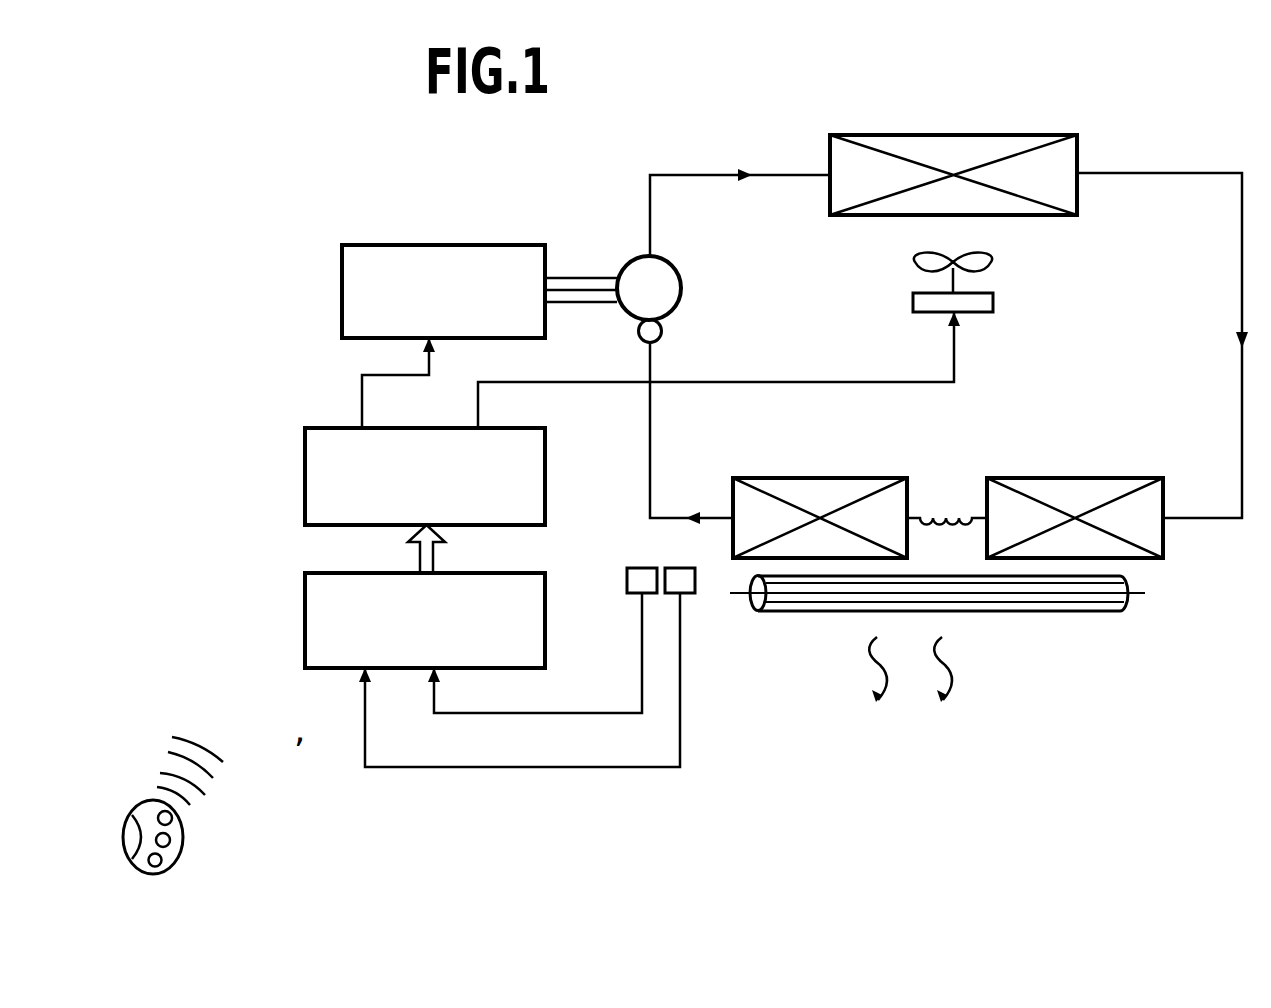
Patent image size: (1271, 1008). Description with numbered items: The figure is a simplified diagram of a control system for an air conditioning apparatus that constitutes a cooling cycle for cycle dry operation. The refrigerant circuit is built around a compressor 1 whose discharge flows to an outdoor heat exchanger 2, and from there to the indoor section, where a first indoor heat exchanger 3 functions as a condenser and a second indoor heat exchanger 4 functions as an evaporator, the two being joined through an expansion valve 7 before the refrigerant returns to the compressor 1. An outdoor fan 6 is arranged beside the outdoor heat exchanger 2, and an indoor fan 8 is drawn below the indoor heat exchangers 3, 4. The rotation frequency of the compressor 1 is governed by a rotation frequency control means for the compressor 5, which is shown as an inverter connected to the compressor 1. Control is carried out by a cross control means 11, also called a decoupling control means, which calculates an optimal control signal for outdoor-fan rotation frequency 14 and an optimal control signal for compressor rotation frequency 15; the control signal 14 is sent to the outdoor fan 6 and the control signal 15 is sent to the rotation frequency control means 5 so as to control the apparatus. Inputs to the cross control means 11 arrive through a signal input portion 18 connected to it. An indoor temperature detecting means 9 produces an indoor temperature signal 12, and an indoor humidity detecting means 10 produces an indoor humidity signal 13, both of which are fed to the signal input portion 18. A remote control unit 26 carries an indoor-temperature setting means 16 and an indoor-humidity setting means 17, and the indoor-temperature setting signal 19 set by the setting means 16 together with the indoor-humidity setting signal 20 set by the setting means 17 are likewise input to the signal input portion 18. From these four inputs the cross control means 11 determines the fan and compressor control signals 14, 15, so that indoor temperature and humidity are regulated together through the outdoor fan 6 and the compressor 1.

The compressor 1 is at (679, 277).
The outdoor heat exchanger 2 is at (965, 135).
The first indoor heat exchanger 3 is at (1089, 478).
The second indoor heat exchanger 4 is at (830, 478).
The rotation frequency control means for the compressor 5 is at (463, 245).
The outdoor fan 6 is at (993, 262).
The expansion valve 7 is at (952, 511).
The indoor fan 8 is at (1107, 613).
The indoor temperature detecting means 9 is at (672, 548).
The indoor humidity detecting means 10 is at (641, 568).
The cross control means 11 is at (305, 448).
The indoor temperature signal 12 is at (365, 748).
The indoor humidity signal 13 is at (434, 690).
The control signal for outdoor-fan rotation frequency 14 is at (585, 382).
The control signal for compressor rotation frequency 15 is at (362, 392).
The indoor-temperature setting means 16 is at (160, 861).
The indoor-humidity setting means 17 is at (170, 840).
The signal input portion 18 is at (305, 597).
The indoor-temperature setting signal 19 is at (258, 692).
The indoor-humidity setting signal 20 is at (254, 757).
The remote control unit 26 is at (123, 828).